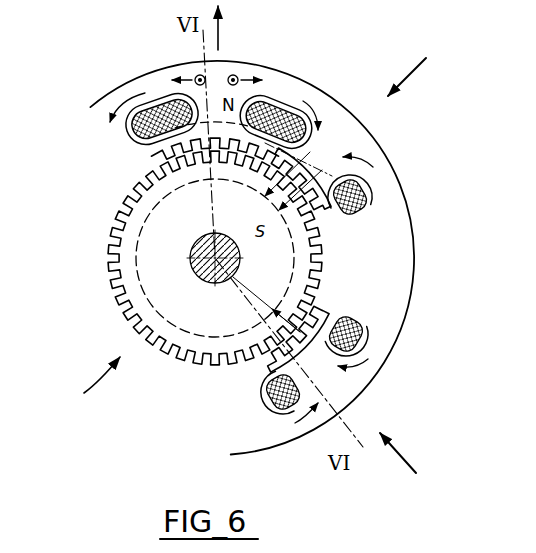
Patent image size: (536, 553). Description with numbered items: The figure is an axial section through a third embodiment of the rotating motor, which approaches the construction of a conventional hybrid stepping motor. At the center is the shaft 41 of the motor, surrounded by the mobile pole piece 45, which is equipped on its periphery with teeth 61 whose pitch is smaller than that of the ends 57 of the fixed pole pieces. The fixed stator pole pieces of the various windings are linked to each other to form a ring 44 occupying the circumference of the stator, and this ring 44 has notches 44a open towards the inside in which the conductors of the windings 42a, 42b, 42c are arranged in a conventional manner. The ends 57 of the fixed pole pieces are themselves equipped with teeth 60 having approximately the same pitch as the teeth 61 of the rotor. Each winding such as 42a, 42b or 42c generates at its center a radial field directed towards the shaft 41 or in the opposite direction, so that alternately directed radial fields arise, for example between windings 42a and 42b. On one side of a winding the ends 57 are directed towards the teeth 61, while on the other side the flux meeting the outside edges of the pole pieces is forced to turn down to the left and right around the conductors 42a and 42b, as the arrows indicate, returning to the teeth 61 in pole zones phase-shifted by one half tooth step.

The shaft 41 is at (191, 247).
The winding 42a is at (158, 100).
The winding 42b is at (286, 108).
The winding 42c is at (359, 192).
The fixed pole piece ring 44 is at (238, 63).
The notch 44a is at (283, 163).
The mobile pole piece 45 is at (127, 197).
The end of fixed pole piece 57 is at (157, 142).
The teeth 60 is at (306, 104).
The teeth 61 is at (110, 279).